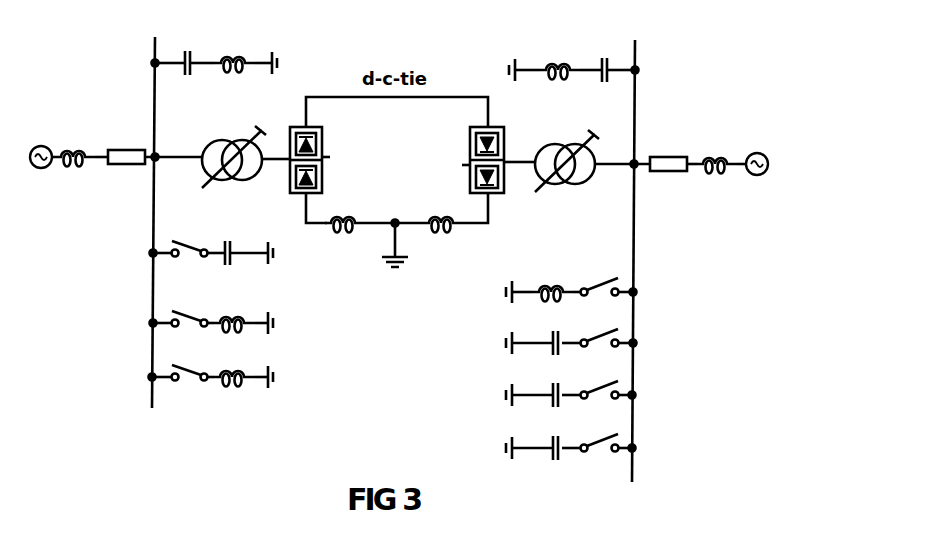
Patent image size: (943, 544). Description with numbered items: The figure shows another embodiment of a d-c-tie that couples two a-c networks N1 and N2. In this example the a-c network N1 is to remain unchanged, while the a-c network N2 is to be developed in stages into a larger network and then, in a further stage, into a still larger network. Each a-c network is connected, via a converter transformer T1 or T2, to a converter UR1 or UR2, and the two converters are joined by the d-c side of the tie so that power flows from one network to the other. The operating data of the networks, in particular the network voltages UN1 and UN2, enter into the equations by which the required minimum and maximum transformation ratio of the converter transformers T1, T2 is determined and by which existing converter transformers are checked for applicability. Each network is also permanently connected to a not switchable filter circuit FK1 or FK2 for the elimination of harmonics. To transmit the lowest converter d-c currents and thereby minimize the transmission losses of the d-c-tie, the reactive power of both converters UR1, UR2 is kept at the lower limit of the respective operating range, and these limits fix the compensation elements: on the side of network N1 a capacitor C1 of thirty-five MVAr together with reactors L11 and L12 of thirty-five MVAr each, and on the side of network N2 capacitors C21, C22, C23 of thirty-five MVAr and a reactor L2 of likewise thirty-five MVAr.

The a-c network N1 is at (157, 209).
The a-c network N2 is at (671, 250).
The filter circuit FK1 is at (253, 52).
The filter circuit FK2 is at (542, 60).
The converter transformer T1 is at (240, 134).
The converter transformer T2 is at (575, 140).
The converter UR1 is at (326, 160).
The converter UR2 is at (464, 160).
The network voltage UN1 is at (152, 218).
The network voltage UN2 is at (635, 228).
The compensation element C1 is at (233, 246).
The compensation element L11 is at (230, 317).
The compensation element L12 is at (230, 372).
The compensation element L2 is at (563, 281).
The compensation element C21 is at (550, 335).
The compensation element C22 is at (550, 388).
The compensation element C23 is at (550, 441).